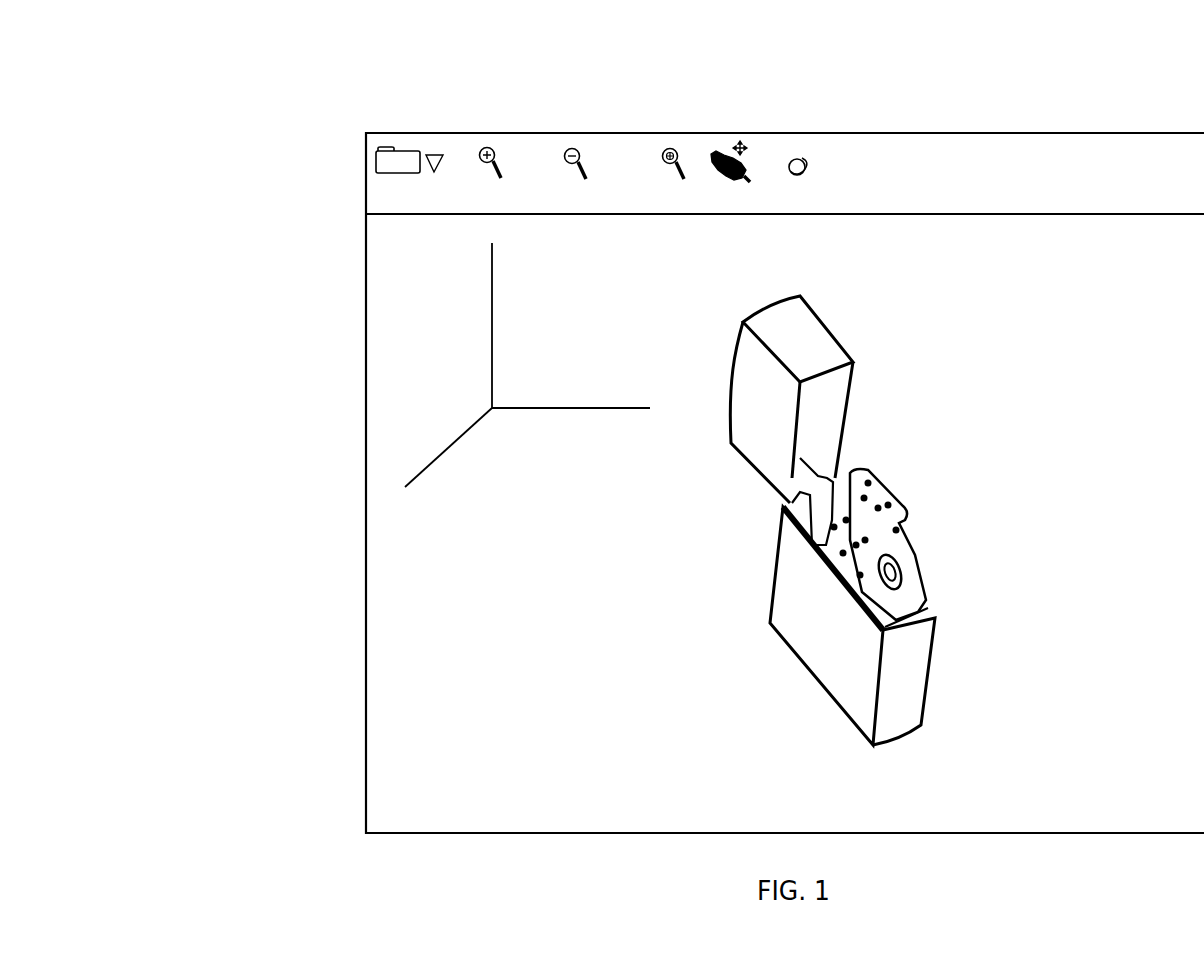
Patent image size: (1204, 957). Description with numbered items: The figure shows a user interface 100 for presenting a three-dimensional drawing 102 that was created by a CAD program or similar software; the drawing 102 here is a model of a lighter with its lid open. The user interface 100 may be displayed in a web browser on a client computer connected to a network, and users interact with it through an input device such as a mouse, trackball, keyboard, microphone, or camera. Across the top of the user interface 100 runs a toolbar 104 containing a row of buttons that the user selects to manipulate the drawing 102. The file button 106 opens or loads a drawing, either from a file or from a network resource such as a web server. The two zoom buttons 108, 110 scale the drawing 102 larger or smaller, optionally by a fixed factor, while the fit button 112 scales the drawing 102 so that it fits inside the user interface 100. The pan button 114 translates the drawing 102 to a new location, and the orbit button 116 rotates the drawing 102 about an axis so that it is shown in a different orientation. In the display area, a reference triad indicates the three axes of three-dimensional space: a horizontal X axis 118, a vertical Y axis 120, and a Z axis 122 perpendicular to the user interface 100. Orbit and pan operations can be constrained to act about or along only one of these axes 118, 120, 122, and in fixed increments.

The user interface 100 is at (206, 76).
The 3D drawing 102 is at (795, 656).
The toolbar 104 is at (1193, 191).
The file button 106 is at (368, 175).
The zoom button 108 is at (489, 147).
The zoom button 110 is at (574, 148).
The fit button 112 is at (672, 149).
The pan button 114 is at (740, 143).
The orbit button 116 is at (802, 157).
The X axis 118 is at (596, 407).
The Y axis 120 is at (494, 288).
The Z axis 122 is at (437, 460).